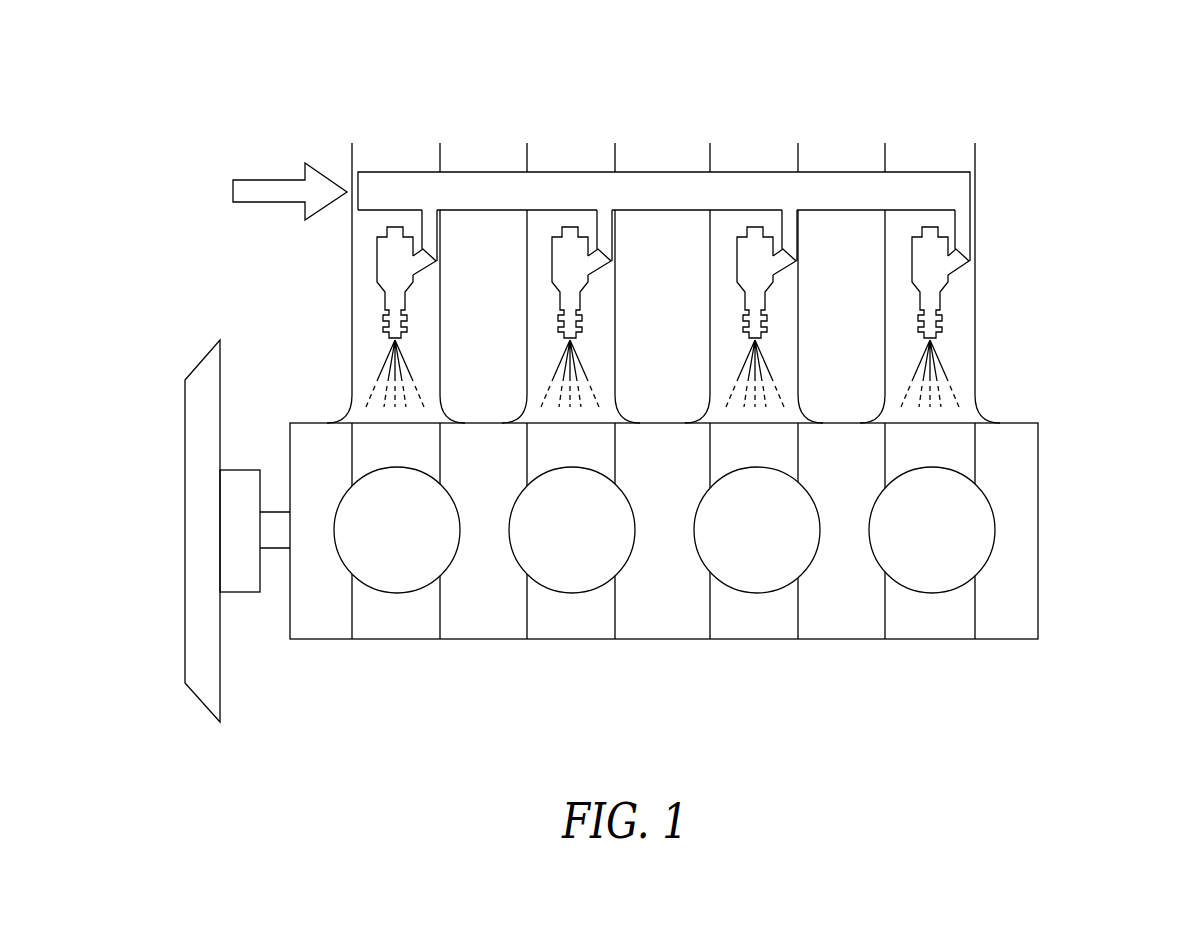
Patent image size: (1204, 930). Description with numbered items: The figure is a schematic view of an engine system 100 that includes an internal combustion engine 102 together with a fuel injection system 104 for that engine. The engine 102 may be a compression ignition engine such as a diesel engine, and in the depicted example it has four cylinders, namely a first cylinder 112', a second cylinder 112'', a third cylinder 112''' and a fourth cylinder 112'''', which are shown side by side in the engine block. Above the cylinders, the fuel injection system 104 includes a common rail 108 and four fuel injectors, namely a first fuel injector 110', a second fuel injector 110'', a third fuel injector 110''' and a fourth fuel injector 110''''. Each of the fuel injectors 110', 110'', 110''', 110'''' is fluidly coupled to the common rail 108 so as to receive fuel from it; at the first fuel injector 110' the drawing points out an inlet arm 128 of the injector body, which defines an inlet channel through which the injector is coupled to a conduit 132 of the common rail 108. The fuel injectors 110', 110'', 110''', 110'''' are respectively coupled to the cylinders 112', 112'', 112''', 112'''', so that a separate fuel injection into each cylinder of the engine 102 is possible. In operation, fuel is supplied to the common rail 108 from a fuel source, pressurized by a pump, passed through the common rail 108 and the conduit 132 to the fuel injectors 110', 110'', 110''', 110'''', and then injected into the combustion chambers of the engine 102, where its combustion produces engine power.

The engine system 100 is at (1090, 98).
The internal combustion engine 102 is at (317, 639).
The fuel injection system 104 is at (403, 172).
The common rail 108 is at (487, 172).
The first fuel injector 110' is at (396, 317).
The second fuel injector 110'' is at (543, 317).
The third fuel injector 110''' is at (724, 317).
The fourth fuel injector 110'''' is at (900, 317).
The first cylinder 112' is at (397, 580).
The second cylinder 112'' is at (572, 580).
The third cylinder 112''' is at (757, 580).
The fourth cylinder 112'''' is at (932, 580).
The inlet arm 128 is at (427, 268).
The conduit 132 is at (432, 229).